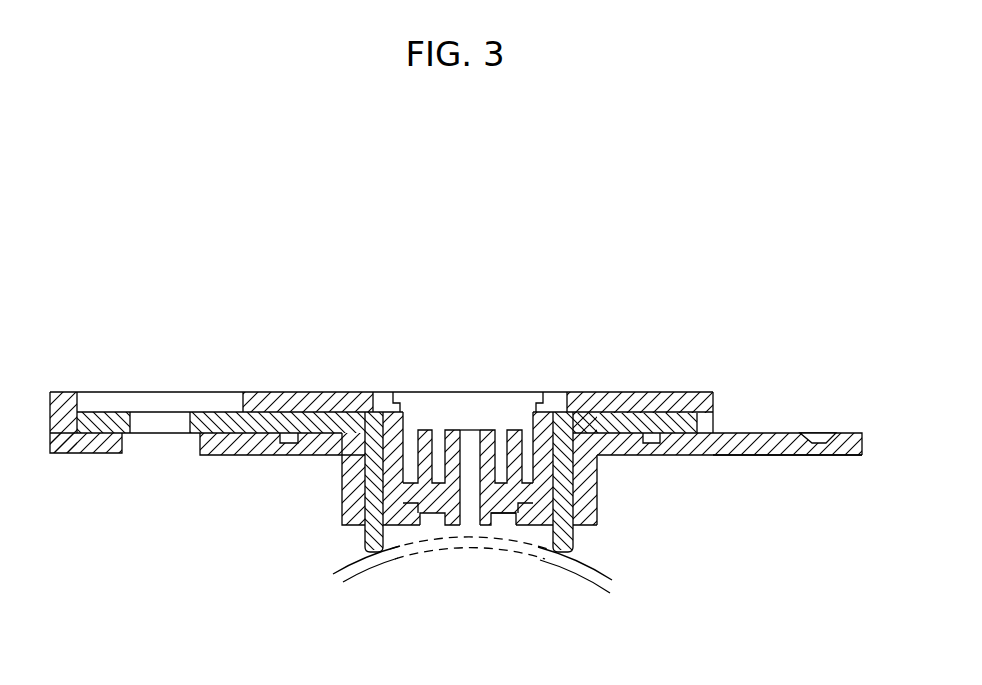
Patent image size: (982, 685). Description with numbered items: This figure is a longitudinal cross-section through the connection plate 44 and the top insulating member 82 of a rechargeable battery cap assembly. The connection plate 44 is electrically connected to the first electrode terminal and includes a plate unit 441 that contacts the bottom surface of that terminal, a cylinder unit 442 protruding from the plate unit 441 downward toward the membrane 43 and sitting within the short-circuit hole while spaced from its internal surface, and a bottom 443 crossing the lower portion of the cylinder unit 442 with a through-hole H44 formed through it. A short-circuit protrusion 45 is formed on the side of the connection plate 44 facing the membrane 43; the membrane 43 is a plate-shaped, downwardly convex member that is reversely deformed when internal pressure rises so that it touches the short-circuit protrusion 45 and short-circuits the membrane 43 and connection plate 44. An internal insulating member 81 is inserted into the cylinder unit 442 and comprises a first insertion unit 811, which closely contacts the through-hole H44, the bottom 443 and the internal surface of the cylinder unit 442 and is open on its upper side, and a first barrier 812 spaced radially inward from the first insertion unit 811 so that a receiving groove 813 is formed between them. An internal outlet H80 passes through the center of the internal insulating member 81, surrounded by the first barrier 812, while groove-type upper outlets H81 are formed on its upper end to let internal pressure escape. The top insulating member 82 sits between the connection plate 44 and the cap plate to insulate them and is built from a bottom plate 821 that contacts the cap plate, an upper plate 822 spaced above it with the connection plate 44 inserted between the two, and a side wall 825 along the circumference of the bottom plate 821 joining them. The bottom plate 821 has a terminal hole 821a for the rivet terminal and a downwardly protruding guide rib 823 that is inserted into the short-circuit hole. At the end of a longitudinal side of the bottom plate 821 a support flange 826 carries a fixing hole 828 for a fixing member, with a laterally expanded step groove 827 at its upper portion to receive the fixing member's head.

The membrane 43 is at (362, 590).
The connection plate 44 is at (107, 408).
The plate unit 441 is at (620, 392).
The cylinder unit 442 is at (564, 472).
The bottom 443 is at (535, 545).
The short-circuit protrusion 45 is at (565, 540).
The internal insulating member 81 is at (455, 420).
The first insertion unit 811 is at (435, 497).
The first barrier 812 is at (448, 430).
The receiving groove 813 is at (405, 461).
The top insulating member 82 is at (714, 386).
The bottom plate 821 is at (93, 455).
The terminal hole 821a is at (188, 455).
The upper plate 822 is at (283, 392).
The guide rib 823 is at (585, 503).
The side wall 825 is at (62, 392).
The support flange 826 is at (782, 433).
The step groove 827 is at (830, 433).
The fixing hole 828 is at (815, 455).
The through-hole H44 is at (483, 510).
The internal outlet H80 is at (470, 507).
The upper outlet H81 is at (543, 395).